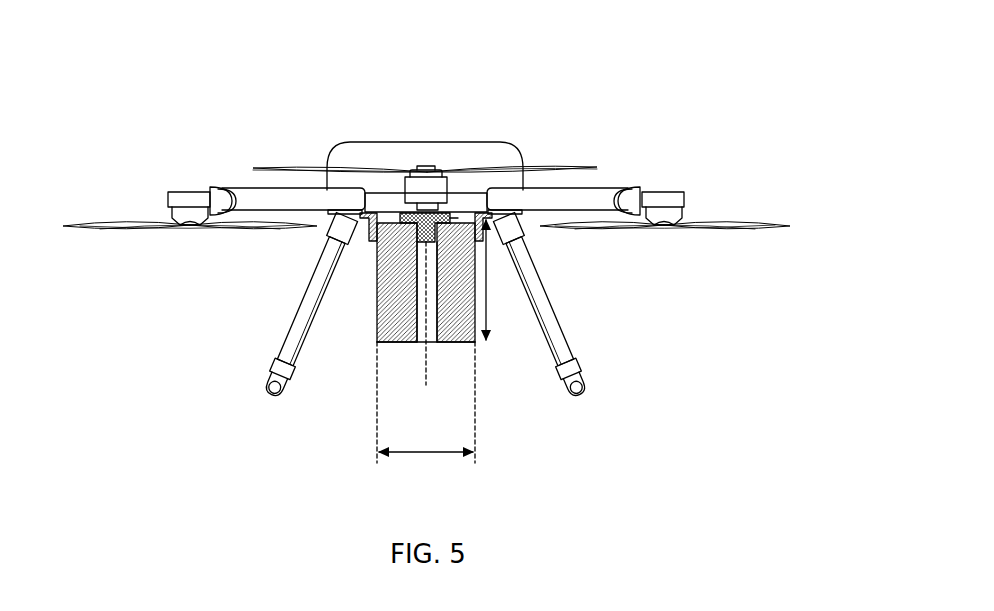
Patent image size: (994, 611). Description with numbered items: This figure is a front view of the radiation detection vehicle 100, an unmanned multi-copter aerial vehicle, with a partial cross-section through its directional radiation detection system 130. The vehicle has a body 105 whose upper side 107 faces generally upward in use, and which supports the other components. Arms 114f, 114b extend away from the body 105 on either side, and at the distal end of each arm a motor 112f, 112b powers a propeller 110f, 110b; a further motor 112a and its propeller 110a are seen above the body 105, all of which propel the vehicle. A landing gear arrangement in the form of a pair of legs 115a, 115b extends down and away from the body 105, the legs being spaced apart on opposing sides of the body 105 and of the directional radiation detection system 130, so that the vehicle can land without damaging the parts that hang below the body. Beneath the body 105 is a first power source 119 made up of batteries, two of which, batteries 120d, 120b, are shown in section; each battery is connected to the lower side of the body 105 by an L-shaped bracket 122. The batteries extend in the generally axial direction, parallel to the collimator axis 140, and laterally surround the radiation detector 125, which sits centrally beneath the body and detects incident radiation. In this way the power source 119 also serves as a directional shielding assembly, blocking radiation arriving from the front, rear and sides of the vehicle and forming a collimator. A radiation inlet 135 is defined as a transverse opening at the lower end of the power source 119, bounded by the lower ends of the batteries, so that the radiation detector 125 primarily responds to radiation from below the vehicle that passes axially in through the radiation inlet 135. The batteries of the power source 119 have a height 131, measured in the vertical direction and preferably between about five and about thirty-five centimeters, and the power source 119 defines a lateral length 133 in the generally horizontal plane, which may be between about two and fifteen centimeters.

The radiation detection vehicle 100 is at (243, 87).
The body 105 is at (382, 155).
The upper side 107 is at (405, 125).
The propeller 110a is at (527, 170).
The propeller 110b is at (715, 227).
The propeller 110f is at (125, 226).
The motor 112a is at (430, 187).
The motor 112b is at (673, 198).
The motor 112f is at (183, 197).
The arm 114b is at (595, 195).
The arm 114f is at (260, 197).
The leg 115a is at (297, 327).
The leg 115b is at (550, 322).
The first power source 119 is at (370, 347).
The battery 120b is at (467, 298).
The battery 120d is at (390, 292).
The L-shaped bracket 122 is at (373, 220).
The radiation detector 125 is at (425, 223).
The directional radiation detection system 130 is at (446, 352).
The height 131 is at (486, 279).
The lateral length 133 is at (420, 454).
The radiation inlet 135 is at (422, 340).
The collimator axis 140 is at (423, 258).